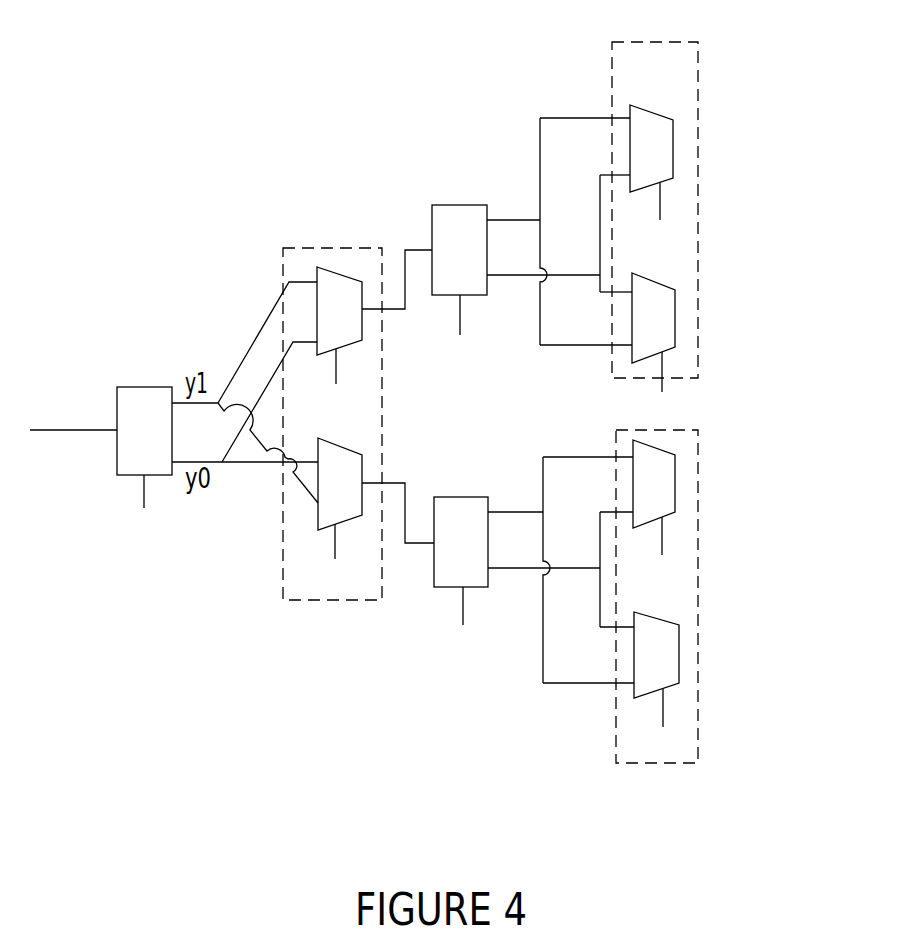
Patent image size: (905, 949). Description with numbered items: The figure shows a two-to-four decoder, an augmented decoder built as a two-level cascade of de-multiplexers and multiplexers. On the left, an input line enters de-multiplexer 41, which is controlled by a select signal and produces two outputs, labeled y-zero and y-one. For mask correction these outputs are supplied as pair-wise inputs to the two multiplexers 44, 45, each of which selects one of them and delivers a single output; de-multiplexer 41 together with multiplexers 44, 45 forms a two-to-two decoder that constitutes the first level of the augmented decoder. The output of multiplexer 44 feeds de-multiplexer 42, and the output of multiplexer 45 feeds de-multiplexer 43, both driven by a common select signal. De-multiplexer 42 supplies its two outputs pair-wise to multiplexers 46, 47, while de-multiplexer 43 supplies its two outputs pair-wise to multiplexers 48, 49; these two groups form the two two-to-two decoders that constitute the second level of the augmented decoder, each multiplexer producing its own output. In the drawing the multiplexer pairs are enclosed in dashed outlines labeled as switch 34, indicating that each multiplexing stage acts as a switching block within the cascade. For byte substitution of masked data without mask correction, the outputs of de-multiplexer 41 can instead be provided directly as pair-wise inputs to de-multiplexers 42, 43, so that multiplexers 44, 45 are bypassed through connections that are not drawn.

The switch 34 is at (741, 400).
The de-multiplexer 41 is at (134, 396).
The de-multiplexer 42 is at (469, 203).
The de-multiplexer 43 is at (433, 588).
The multiplexer 44 is at (317, 263).
The multiplexer 45 is at (316, 516).
The multiplexer 46 is at (674, 112).
The multiplexer 47 is at (678, 298).
The multiplexer 48 is at (629, 443).
The multiplexer 49 is at (679, 624).